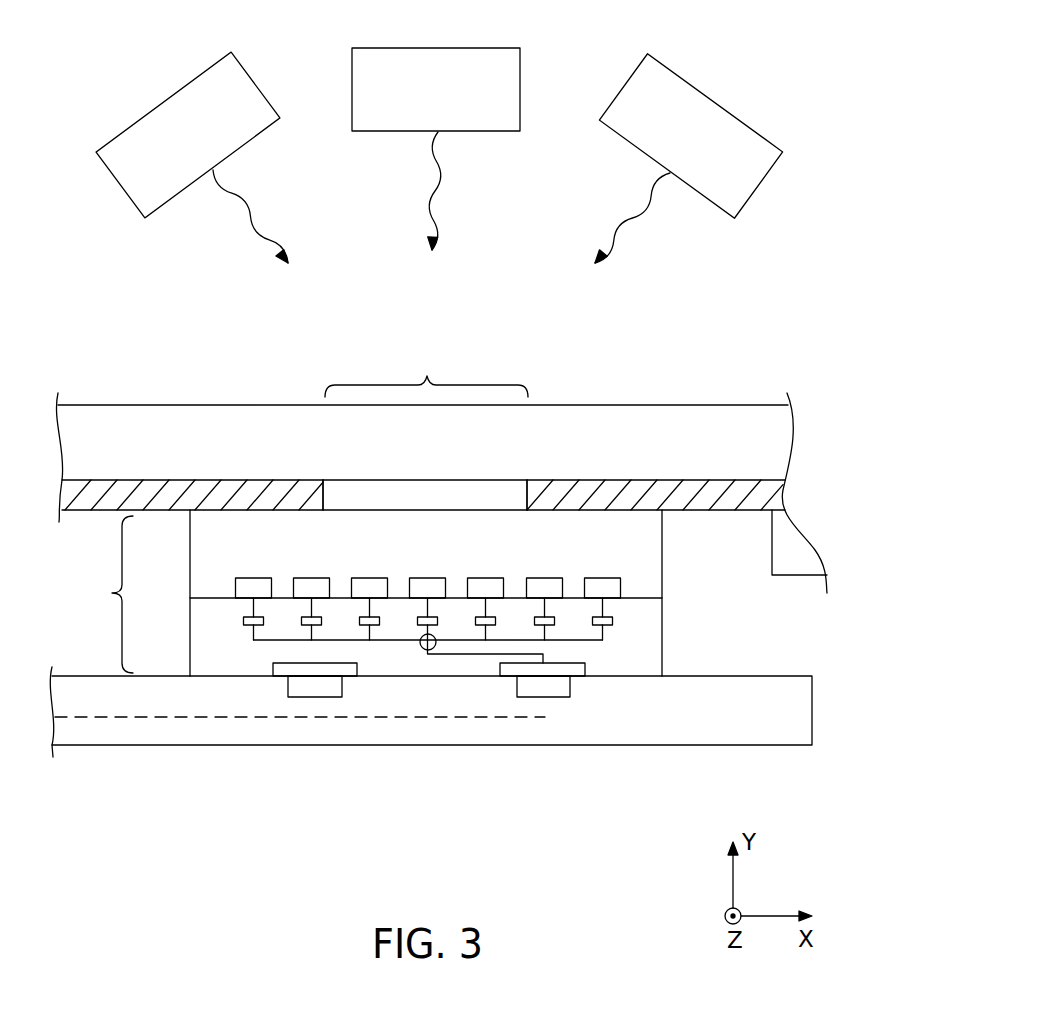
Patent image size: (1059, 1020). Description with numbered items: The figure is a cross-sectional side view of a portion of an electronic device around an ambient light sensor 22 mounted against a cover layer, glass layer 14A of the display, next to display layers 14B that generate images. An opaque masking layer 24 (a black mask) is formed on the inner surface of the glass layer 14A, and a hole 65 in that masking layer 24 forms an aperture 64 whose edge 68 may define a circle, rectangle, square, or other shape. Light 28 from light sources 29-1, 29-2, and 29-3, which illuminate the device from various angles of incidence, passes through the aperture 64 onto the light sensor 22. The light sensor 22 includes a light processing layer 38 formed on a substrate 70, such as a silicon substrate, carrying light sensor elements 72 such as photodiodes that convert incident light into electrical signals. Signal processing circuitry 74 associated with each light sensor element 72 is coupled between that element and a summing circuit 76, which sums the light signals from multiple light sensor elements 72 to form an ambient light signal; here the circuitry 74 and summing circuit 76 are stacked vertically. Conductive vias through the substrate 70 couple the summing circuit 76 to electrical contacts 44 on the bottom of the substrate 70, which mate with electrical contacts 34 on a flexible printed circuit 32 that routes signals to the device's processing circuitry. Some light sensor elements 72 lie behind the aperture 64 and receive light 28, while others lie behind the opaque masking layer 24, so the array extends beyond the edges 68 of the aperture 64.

The light source 29-1 is at (240, 62).
The light source 29-2 is at (455, 48).
The light source 29-3 is at (677, 72).
The light 28 is at (243, 200).
The glass layer 14A is at (648, 420).
The opaque masking layer 24 is at (82, 502).
The aperture 64 is at (426, 373).
The hole 65 is at (443, 487).
The edge of aperture 68 is at (333, 490).
The display layers 14B is at (787, 527).
The light sensor 22 is at (106, 594).
The light processing layer 38 is at (203, 550).
The substrate 70 is at (203, 622).
The light sensor elements 72 is at (364, 578).
The signal processing circuitry 74 is at (244, 623).
The summing circuit 76 is at (428, 652).
The electrical contacts 44 is at (273, 667).
The electrical contacts 34 is at (320, 688).
The flexible printed circuit 32 is at (735, 733).